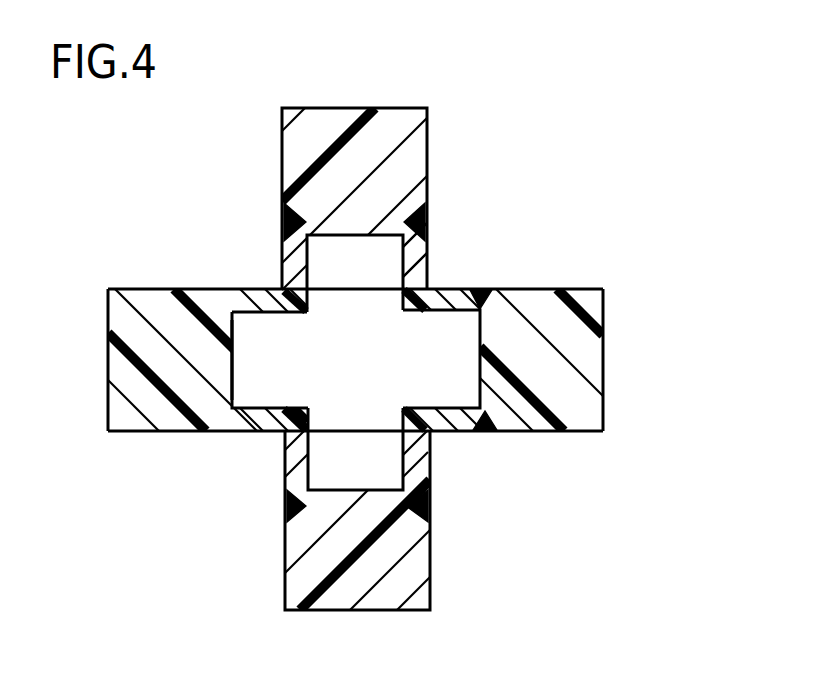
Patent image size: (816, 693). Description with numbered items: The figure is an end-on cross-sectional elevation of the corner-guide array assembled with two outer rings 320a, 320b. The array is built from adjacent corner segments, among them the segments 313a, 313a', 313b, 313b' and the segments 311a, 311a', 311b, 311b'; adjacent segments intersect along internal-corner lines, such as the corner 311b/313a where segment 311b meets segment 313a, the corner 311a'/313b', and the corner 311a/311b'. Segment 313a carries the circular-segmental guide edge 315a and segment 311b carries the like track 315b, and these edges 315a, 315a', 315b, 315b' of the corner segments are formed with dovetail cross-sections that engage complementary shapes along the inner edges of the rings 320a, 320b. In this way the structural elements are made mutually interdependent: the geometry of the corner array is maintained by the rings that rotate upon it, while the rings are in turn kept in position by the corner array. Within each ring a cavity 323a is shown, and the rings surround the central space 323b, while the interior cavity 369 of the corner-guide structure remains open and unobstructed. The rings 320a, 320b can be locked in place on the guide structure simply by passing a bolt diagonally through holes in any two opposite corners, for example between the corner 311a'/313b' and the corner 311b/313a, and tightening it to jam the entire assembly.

The outer ring 320a is at (343, 107).
The outer ring 320b is at (107, 372).
The end cavity 323a is at (382, 278).
The central cavity 323b is at (372, 361).
The interior cavity 369 is at (250, 332).
The corner segment 313a is at (460, 222).
The corner segment 313a' is at (198, 223).
The corner segment 313b is at (242, 281).
The corner segment 313b' is at (237, 440).
The circular-segmental guide edge 315a is at (466, 372).
The guide edge 315a' is at (242, 362).
The track 315b is at (352, 281).
The guide edge 315b' is at (360, 441).
The corner segment 311a is at (528, 499).
The corner segment 311a' is at (196, 494).
The corner segment 311b is at (518, 270).
The corner segment 311b' is at (465, 439).